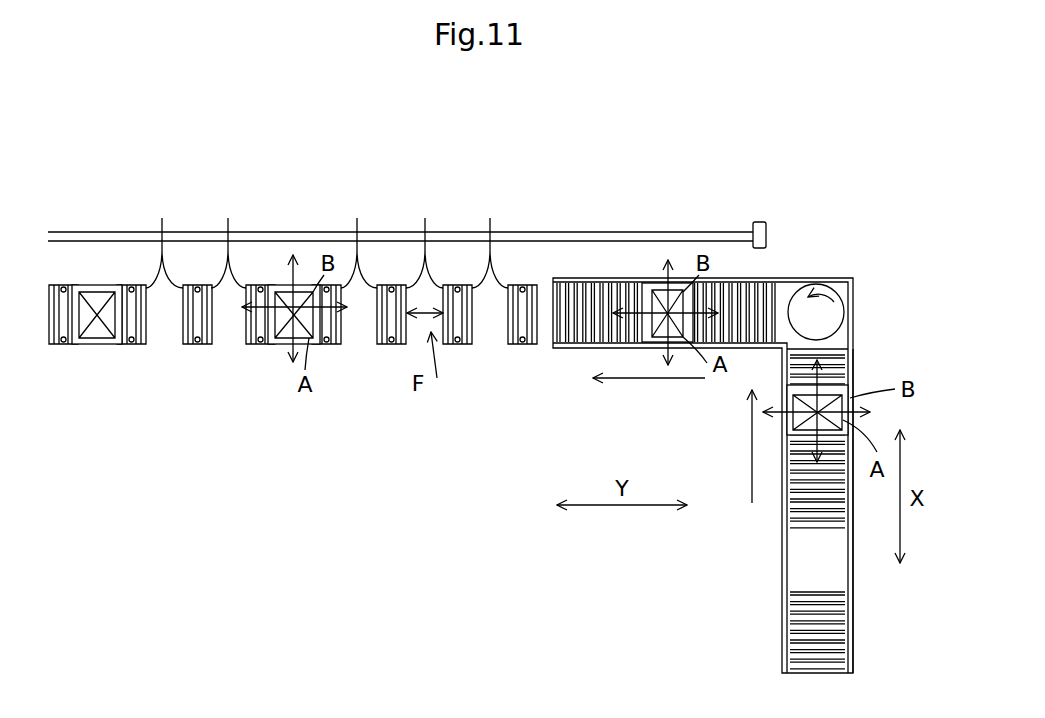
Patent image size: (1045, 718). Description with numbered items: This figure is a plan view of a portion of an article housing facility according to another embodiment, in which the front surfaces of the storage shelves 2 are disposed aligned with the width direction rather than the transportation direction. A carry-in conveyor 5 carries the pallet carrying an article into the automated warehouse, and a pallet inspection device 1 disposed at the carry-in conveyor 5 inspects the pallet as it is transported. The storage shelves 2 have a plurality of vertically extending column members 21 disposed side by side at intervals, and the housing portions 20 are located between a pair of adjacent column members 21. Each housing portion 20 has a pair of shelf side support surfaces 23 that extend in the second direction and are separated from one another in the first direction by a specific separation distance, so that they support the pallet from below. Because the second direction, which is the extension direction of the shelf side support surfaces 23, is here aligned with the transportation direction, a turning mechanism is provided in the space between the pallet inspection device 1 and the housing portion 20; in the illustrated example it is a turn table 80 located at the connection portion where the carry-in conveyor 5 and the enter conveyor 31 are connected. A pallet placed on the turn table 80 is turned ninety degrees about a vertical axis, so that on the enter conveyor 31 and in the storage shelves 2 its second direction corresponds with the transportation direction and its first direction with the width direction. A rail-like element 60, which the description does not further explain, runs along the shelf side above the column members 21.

The pallet inspection device 1 is at (760, 550).
The storage shelves 2 is at (115, 363).
The carry-in conveyor 5 is at (853, 378).
The housing portion 20 is at (425, 320).
The column member 21 is at (131, 345).
The shelf side support surface 23 is at (327, 242).
The enter conveyor 31 is at (643, 280).
The rail 60 is at (694, 232).
The turn table 80 is at (815, 280).